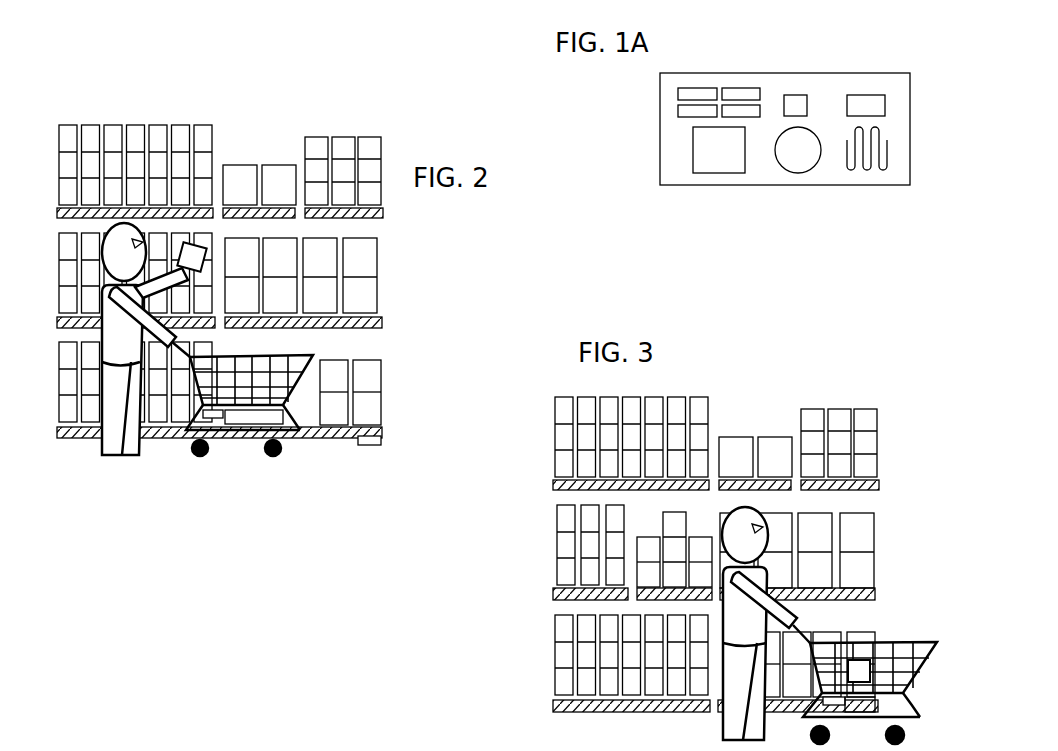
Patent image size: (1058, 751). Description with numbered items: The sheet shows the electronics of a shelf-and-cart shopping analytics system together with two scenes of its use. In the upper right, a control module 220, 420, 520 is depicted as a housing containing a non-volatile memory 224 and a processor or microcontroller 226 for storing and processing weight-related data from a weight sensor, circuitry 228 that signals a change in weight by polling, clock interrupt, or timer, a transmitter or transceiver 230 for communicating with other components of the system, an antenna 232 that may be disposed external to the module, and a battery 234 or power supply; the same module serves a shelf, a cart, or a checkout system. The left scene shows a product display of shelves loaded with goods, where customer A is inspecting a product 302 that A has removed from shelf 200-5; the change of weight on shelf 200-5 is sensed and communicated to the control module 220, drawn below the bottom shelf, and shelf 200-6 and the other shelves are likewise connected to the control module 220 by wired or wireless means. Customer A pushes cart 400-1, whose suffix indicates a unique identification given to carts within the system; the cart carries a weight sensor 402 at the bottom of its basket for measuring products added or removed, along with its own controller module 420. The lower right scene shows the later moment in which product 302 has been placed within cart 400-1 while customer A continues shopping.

In FIG. 1A, the control module 220 is at (785, 170).
In FIG. 2, the control module 220 is at (366, 449).
In FIG. 1A, the controller module 420 is at (785, 170).
In FIG. 2, the controller module 420 is at (213, 414).
In FIG. 1A, the control module 520 is at (756, 190).
In FIG. 1A, the non-volatile memory 224 is at (683, 113).
In FIG. 1A, the processor or microcontroller 226 is at (706, 170).
In FIG. 1A, the circuitry 228 is at (786, 97).
In FIG. 1A, the transmitter or transceiver 230 is at (870, 92).
In FIG. 1A, the antenna 232 is at (862, 168).
In FIG. 1A, the battery 234 is at (796, 165).
In FIG. 2, the shelf 200-5 is at (219, 333).
In FIG. 3, the shelf 200-5 is at (650, 586).
In FIG. 2, the shelf 200-6 is at (388, 320).
In FIG. 2, the product 302 is at (196, 247).
In FIG. 3, the product 302 is at (866, 674).
In FIG. 2, the cart 400-1 is at (260, 437).
In FIG. 3, the cart 400-1 is at (877, 658).
In FIG. 2, the weight sensor 402 is at (283, 408).
In FIG. 2, the customer A is at (130, 466).
In FIG. 3, the customer A is at (714, 729).